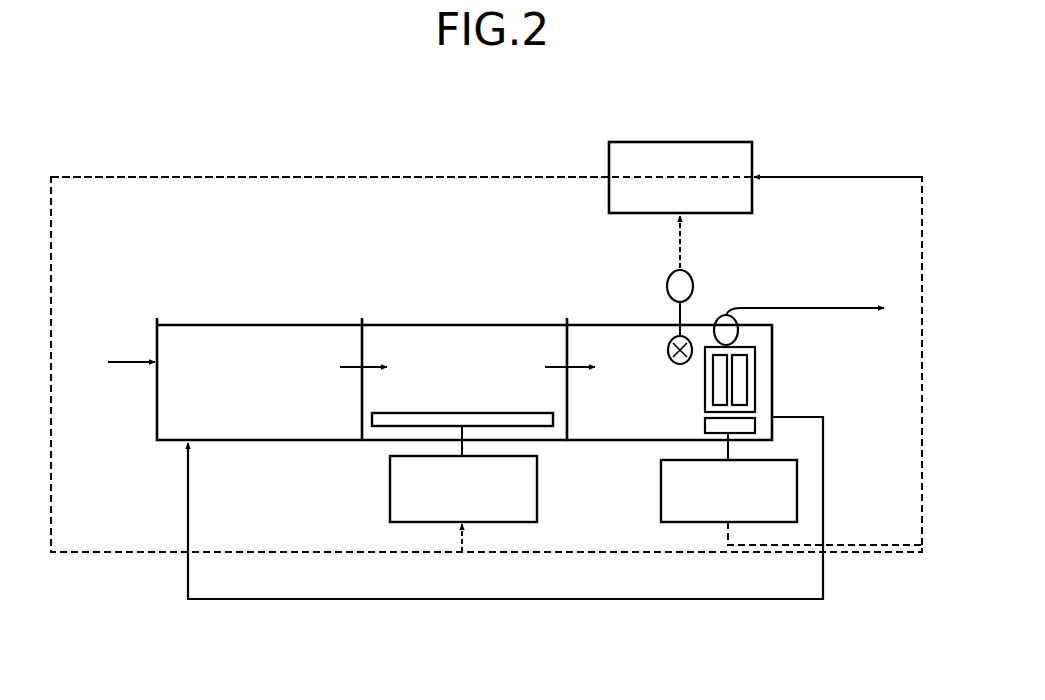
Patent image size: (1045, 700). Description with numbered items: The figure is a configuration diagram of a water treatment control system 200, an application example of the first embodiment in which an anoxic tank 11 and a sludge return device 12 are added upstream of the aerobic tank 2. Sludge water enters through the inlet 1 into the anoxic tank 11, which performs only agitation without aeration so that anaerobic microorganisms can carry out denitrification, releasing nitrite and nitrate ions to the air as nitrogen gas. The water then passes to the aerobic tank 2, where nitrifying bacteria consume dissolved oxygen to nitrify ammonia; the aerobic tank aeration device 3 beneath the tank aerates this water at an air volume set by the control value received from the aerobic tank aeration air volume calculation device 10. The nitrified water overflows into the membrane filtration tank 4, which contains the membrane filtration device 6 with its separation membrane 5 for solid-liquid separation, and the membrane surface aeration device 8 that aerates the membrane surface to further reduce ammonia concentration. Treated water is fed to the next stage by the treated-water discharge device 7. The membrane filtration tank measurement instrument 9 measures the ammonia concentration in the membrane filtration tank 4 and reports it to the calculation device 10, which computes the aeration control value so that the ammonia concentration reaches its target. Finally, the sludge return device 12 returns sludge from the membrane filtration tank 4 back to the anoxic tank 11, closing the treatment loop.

The water treatment control system 200 is at (136, 156).
The inlet 1 is at (153, 366).
The aerobic tank 2 is at (432, 325).
The aerobic tank aeration device 3 is at (390, 480).
The membrane filtration tank 4 is at (622, 325).
The separation membrane 5 is at (741, 396).
The membrane filtration device 6 is at (705, 406).
The treated-water discharge device 7 is at (741, 308).
The membrane surface aeration device 8 is at (702, 524).
The membrane filtration tank measurement instrument 9 is at (669, 283).
The aerobic tank aeration air volume calculation device 10 is at (630, 141).
The anoxic tank 11 is at (227, 325).
The sludge return device 12 is at (790, 602).